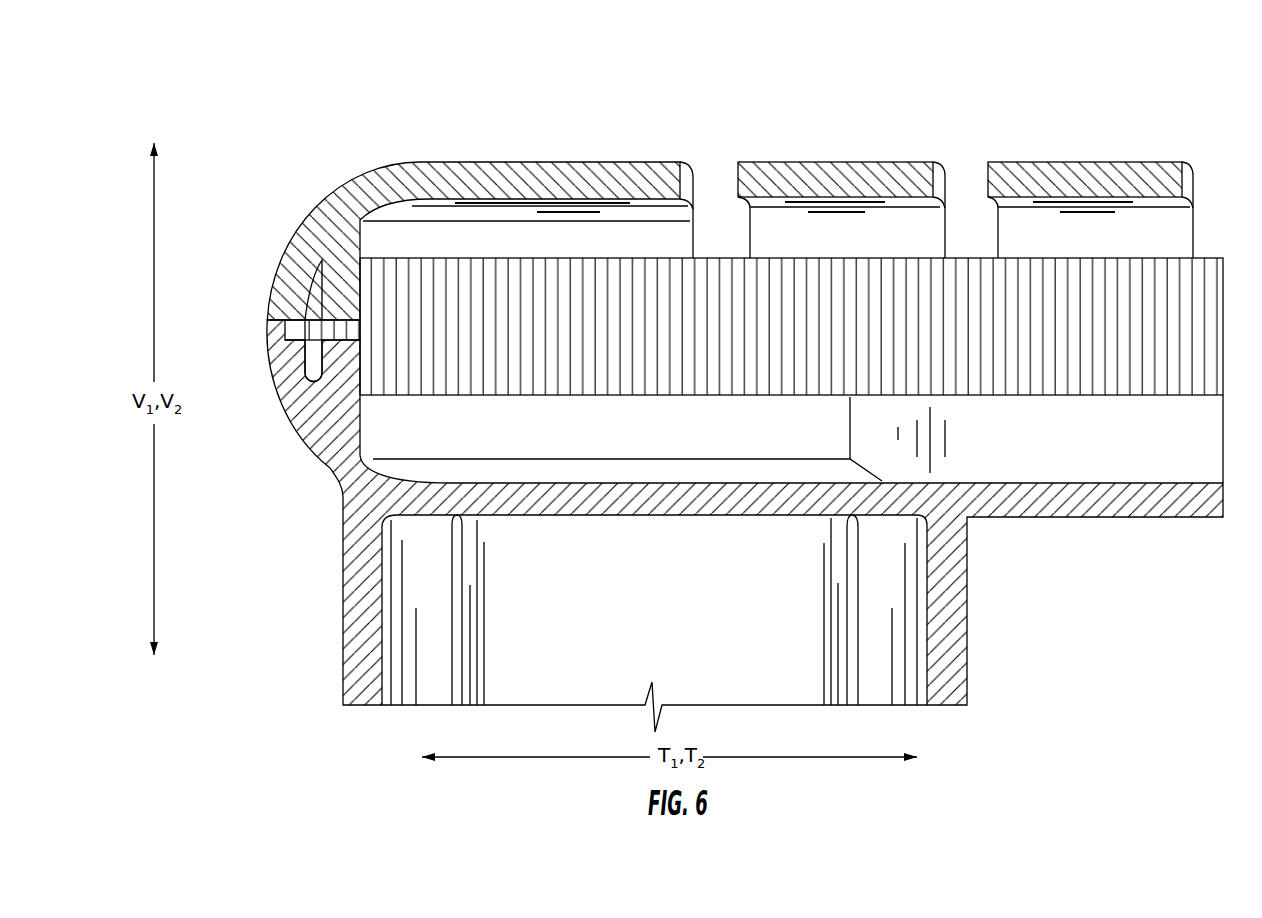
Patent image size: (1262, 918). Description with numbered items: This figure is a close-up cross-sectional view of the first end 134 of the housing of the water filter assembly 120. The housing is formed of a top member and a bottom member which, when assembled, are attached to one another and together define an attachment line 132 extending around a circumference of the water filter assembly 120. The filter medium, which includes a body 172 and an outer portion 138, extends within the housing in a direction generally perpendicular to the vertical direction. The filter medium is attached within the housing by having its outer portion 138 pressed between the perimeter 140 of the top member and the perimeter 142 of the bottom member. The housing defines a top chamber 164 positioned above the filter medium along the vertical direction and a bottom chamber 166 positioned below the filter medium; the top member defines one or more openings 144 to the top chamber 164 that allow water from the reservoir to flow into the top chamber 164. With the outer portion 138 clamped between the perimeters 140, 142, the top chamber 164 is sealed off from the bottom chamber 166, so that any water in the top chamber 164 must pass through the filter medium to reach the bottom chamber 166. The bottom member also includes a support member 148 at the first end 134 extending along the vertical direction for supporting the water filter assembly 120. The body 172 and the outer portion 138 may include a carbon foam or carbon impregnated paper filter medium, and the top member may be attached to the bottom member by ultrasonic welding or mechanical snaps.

The water filter assembly 120 is at (574, 63).
The attachment line 132 is at (259, 320).
The first end 134 is at (408, 99).
The outer portion 138 is at (350, 327).
The perimeter 140 is at (317, 303).
The perimeter 142 is at (338, 353).
The openings 144 is at (963, 182).
The support member 148 is at (360, 616).
The top chamber 164 is at (838, 222).
The bottom chamber 166 is at (1078, 455).
The body 172 is at (604, 270).